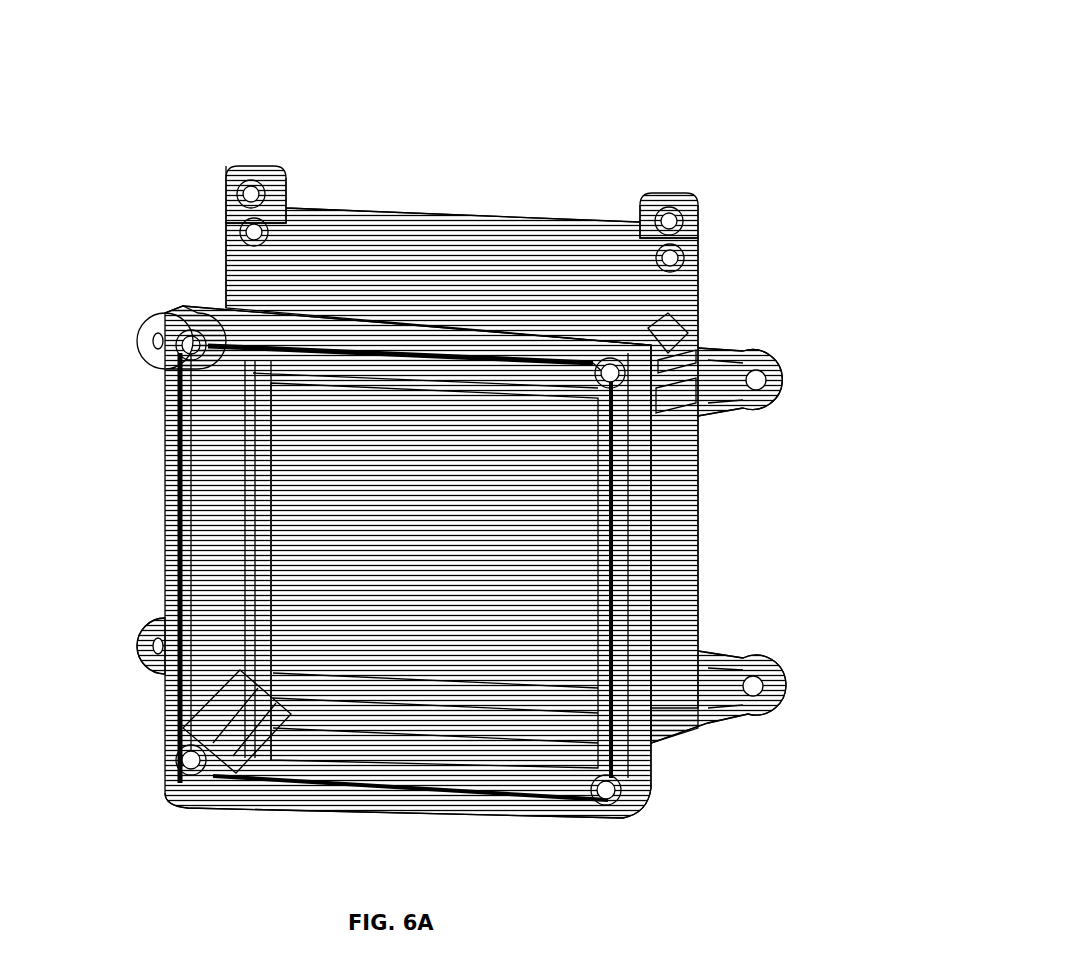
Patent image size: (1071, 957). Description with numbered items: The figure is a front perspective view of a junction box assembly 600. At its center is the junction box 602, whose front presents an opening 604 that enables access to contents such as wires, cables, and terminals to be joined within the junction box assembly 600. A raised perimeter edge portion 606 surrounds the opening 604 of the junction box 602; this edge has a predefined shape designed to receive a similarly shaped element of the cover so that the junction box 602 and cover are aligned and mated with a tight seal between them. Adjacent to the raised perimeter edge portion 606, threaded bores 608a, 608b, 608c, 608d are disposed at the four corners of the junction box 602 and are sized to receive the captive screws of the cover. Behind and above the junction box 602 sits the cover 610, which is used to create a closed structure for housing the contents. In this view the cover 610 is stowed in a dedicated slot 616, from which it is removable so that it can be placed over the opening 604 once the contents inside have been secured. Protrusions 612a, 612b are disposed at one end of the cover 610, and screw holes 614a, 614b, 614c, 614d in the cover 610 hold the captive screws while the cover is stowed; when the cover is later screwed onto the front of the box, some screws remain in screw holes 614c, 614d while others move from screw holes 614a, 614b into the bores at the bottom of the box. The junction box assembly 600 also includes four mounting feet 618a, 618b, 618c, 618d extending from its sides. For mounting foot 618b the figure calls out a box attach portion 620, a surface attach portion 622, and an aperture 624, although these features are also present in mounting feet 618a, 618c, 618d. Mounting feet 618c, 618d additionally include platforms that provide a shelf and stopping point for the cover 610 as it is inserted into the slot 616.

The junction box assembly 600 is at (485, 471).
The junction box 602 is at (485, 571).
The opening 604 is at (349, 573).
The raised perimeter edge portion 606 is at (355, 342).
The threaded bore 608a is at (182, 333).
The threaded bore 608b is at (606, 362).
The threaded bore 608c is at (182, 755).
The threaded bore 608d is at (598, 786).
The cover 610 is at (472, 218).
The protrusion 612a is at (259, 146).
The protrusion 612b is at (661, 166).
The screw hole 614a is at (240, 178).
The screw hole 614b is at (668, 208).
The screw hole 614c is at (240, 222).
The screw hole 614d is at (668, 250).
The slot 616 is at (483, 393).
The mounting foot 618a is at (138, 333).
The mounting foot 618b is at (800, 358).
The mounting foot 618c is at (148, 640).
The mounting foot 618d is at (760, 678).
The box attach portion 620 is at (667, 388).
The surface attach portion 622 is at (762, 375).
The aperture 624 is at (655, 340).